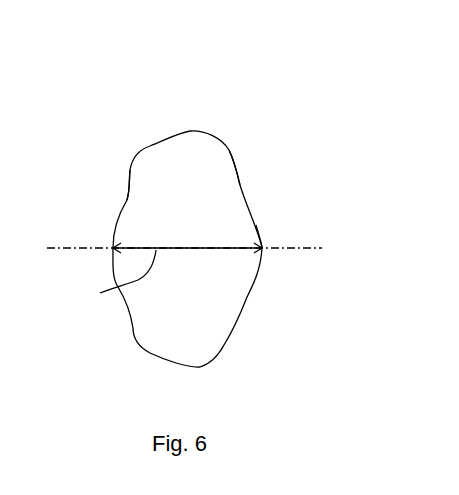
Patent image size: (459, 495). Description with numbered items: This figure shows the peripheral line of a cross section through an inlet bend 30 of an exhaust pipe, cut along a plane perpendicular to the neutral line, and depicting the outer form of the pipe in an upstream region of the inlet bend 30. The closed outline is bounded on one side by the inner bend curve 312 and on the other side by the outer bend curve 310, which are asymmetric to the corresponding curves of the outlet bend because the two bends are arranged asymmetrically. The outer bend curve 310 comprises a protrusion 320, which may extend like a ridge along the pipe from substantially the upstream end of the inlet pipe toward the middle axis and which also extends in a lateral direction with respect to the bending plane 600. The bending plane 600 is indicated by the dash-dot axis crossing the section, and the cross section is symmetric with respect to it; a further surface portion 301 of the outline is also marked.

The inlet bend 30 is at (191, 130).
The particle surface portion 301 is at (115, 287).
The outer bend curve 310 is at (235, 173).
The inner bend curve 312 is at (128, 192).
The protrusion 320 is at (262, 246).
The bending plane 600 is at (77, 247).